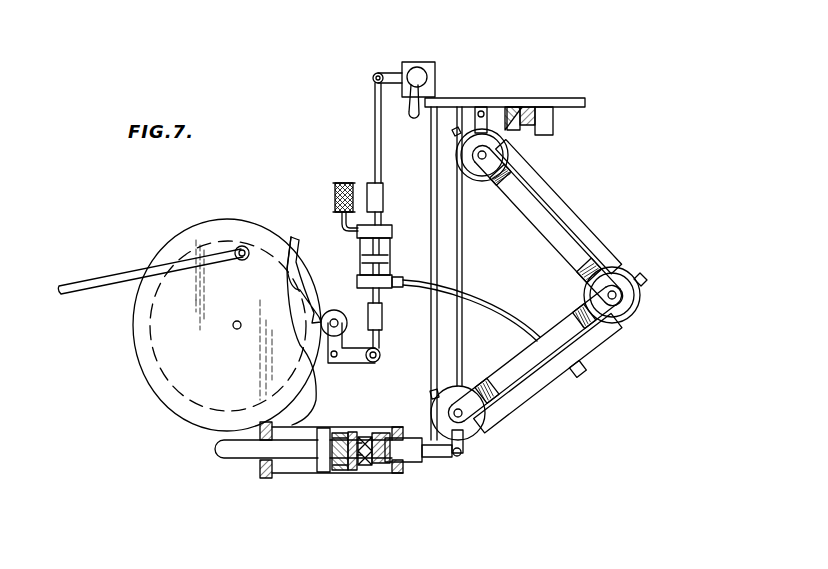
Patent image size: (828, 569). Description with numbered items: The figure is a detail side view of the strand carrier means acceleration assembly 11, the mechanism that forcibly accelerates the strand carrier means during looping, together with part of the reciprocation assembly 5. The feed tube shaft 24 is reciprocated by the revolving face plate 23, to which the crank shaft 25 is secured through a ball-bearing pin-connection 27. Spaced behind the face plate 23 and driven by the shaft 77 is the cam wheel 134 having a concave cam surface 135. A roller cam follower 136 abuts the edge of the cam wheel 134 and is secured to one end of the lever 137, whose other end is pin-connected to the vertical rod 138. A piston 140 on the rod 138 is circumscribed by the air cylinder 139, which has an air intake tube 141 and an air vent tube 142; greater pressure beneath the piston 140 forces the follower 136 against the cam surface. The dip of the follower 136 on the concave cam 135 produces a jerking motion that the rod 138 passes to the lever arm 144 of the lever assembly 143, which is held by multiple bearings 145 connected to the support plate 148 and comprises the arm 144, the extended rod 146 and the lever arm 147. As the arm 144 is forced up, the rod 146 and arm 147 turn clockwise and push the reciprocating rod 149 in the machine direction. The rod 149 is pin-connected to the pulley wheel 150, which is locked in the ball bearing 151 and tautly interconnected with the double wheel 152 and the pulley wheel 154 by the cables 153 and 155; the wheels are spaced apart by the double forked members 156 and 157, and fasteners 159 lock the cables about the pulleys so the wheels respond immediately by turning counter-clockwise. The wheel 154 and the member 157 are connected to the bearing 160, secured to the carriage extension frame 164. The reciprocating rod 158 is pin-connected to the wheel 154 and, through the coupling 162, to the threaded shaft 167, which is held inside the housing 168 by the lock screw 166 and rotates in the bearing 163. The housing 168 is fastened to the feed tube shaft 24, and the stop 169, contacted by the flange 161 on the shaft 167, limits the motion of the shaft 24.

The reciprocation assembly 5 is at (137, 362).
The strand carrier means acceleration assembly 11 is at (602, 207).
The face plate 23 is at (198, 238).
The feed tube shaft 24 is at (242, 458).
The crank shaft 25 is at (83, 293).
The ball-bearing pin-connection 27 is at (247, 247).
The shaft 77 is at (238, 320).
The cam wheel 134 is at (297, 338).
The concave cam surface 135 is at (297, 268).
The roller cam follower 136 is at (335, 314).
The lever 137 is at (353, 360).
The vertical rod 138 is at (380, 298).
The air cylinder 139 is at (360, 247).
The piston 140 is at (388, 258).
The air intake tube 141 is at (495, 307).
The air vent tube 142 is at (342, 183).
The lever assembly 143 is at (400, 67).
The lever arm 144 is at (395, 73).
The bearings 145 is at (434, 67).
The extended rod 146 is at (420, 63).
The lever arm 147 is at (425, 98).
The support plate 148 is at (513, 98).
The reciprocating rod 149 is at (445, 113).
The pulley wheel 150 is at (458, 165).
The bearing 151 is at (553, 117).
The double wheel 152 is at (641, 295).
The cable 153 is at (600, 237).
The pulley wheel 154 is at (476, 432).
The cable 155 is at (580, 360).
The double forked member 156 is at (535, 212).
The double forked member 157 is at (503, 387).
The reciprocating rod 158 is at (442, 453).
The fasteners 159 is at (647, 278).
The bearing 160 is at (412, 462).
The flange 161 is at (352, 473).
The coupling 162 is at (357, 473).
The bearing 163 is at (338, 473).
The carriage extension frame 164 is at (382, 435).
The lock screw 166 is at (315, 462).
The threaded shaft 167 is at (352, 435).
The housing 168 is at (313, 437).
The stop 169 is at (367, 473).